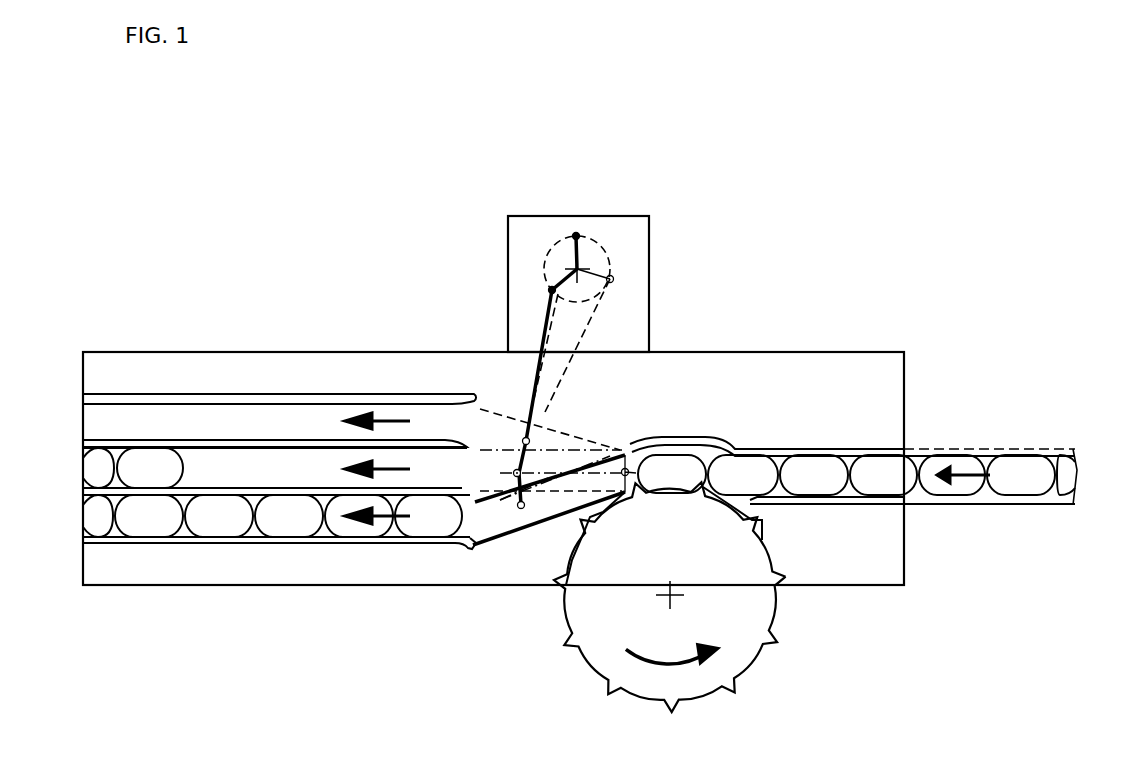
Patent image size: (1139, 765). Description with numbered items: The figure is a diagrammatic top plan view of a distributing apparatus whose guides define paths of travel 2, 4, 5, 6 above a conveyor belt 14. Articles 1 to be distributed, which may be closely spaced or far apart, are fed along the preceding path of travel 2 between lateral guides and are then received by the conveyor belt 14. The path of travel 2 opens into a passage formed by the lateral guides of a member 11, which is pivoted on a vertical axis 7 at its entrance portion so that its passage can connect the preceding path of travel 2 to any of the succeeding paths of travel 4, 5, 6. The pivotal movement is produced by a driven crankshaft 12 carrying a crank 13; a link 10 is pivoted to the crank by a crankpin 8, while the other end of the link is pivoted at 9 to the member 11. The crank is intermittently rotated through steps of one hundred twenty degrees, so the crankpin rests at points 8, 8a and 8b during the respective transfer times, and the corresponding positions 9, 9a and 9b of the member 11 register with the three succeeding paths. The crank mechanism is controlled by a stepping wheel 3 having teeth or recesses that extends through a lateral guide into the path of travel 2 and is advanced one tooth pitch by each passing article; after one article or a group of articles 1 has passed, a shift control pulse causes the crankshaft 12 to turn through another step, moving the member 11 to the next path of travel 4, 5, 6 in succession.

The articles 1 is at (96, 517).
The path of travel 2 is at (783, 458).
The stepping wheel 3 is at (745, 635).
The path of travel 4 is at (182, 530).
The path of travel 5 is at (113, 453).
The path of travel 6 is at (100, 425).
The vertical axis 7 is at (622, 486).
The crankpin 8 is at (527, 222).
The crankpin position 8a is at (576, 233).
The crankpin position 8b is at (613, 277).
The pivot 9 is at (438, 538).
The member position 9a is at (524, 443).
The member position 9b is at (519, 507).
The link 10 is at (540, 408).
The member 11 is at (548, 506).
The crankshaft 12 is at (566, 254).
The crank 13 is at (550, 288).
The conveyor belt 14 is at (737, 372).